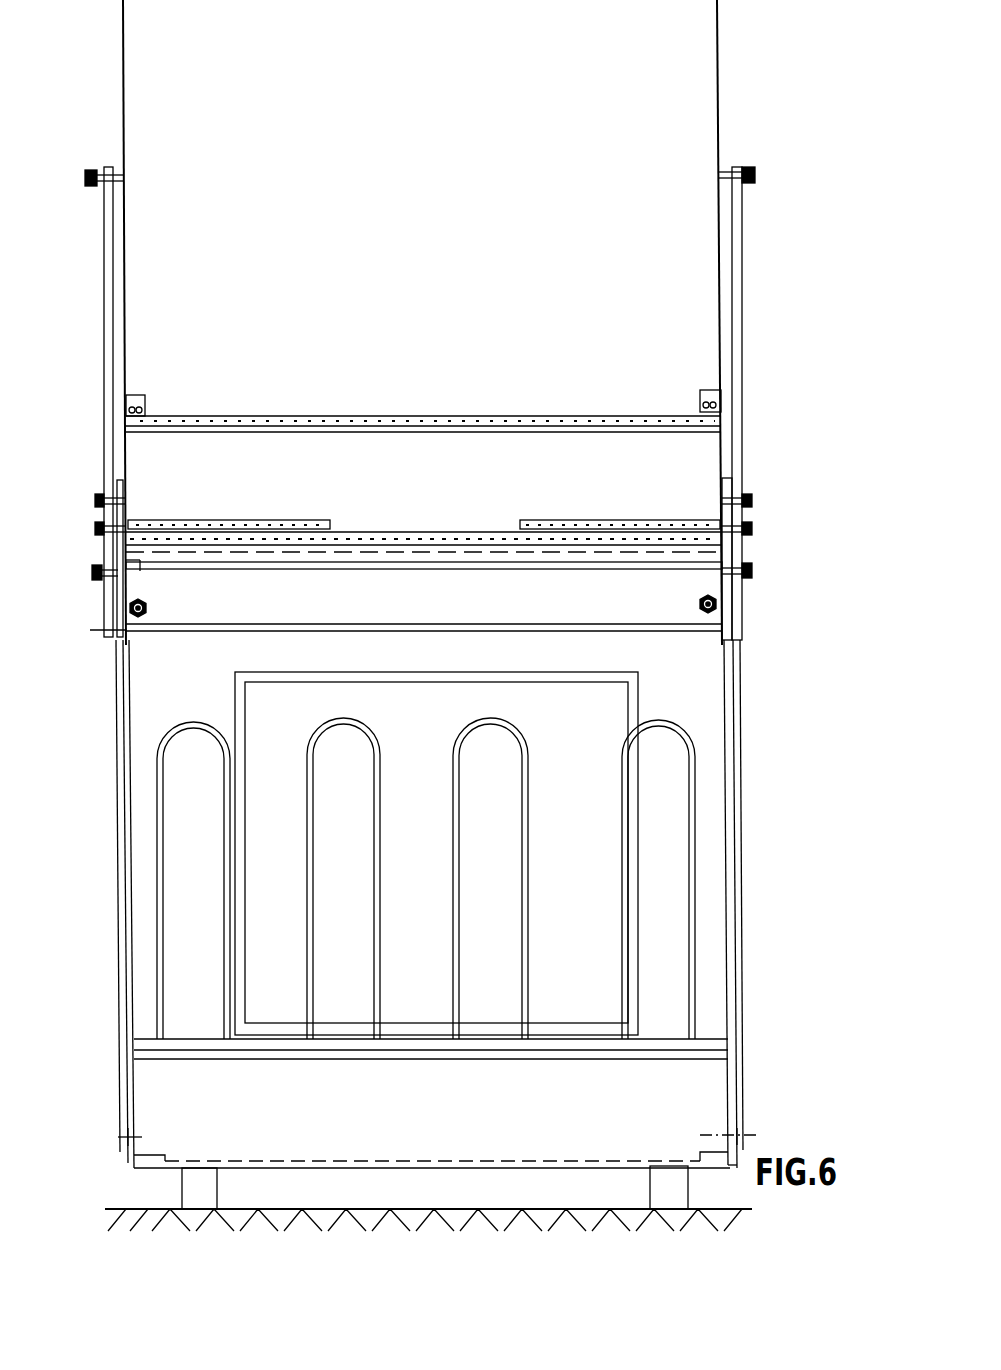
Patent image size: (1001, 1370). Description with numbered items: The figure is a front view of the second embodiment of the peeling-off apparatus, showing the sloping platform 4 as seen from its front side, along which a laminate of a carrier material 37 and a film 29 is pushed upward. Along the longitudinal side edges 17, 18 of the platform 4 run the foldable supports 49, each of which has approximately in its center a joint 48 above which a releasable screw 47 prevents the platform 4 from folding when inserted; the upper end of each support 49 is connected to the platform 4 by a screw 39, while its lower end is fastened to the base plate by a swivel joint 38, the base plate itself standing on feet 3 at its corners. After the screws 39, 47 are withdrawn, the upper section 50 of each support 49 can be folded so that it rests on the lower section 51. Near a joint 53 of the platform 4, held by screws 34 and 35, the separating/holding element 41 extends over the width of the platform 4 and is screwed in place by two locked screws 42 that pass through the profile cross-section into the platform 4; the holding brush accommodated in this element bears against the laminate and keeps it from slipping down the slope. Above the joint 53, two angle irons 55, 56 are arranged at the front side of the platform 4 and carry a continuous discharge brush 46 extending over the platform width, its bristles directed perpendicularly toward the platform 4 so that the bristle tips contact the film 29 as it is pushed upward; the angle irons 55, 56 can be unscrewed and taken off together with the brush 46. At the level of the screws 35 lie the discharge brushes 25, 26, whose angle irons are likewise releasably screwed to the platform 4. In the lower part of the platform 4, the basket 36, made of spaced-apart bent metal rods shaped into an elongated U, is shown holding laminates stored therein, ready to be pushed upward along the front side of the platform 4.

The feet 3 is at (207, 1182).
The sloping platform 4 is at (718, 83).
The side edge 17 is at (130, 794).
The longitudinal side edge 18 is at (742, 752).
The discharge brush 25 is at (238, 530).
The discharge brush 26 is at (585, 530).
The film 29 is at (638, 677).
The screw 34 is at (96, 499).
The screw 35 is at (95, 528).
The basket 36 is at (697, 800).
The carrier material 37 is at (560, 690).
The swivel joint 38 is at (122, 1135).
The screw 39 is at (86, 176).
The separating/holding element 41 is at (236, 632).
The locked screws 42 is at (140, 617).
The continuous discharge brush 46 is at (413, 417).
The releasable screw 47 is at (92, 572).
The joint 48 is at (92, 630).
The supports 49 is at (98, 362).
The upper section 50 is at (104, 303).
The lower section 51 is at (116, 748).
The joint 53 is at (145, 575).
The angle iron 55 is at (145, 396).
The angle iron 56 is at (706, 391).